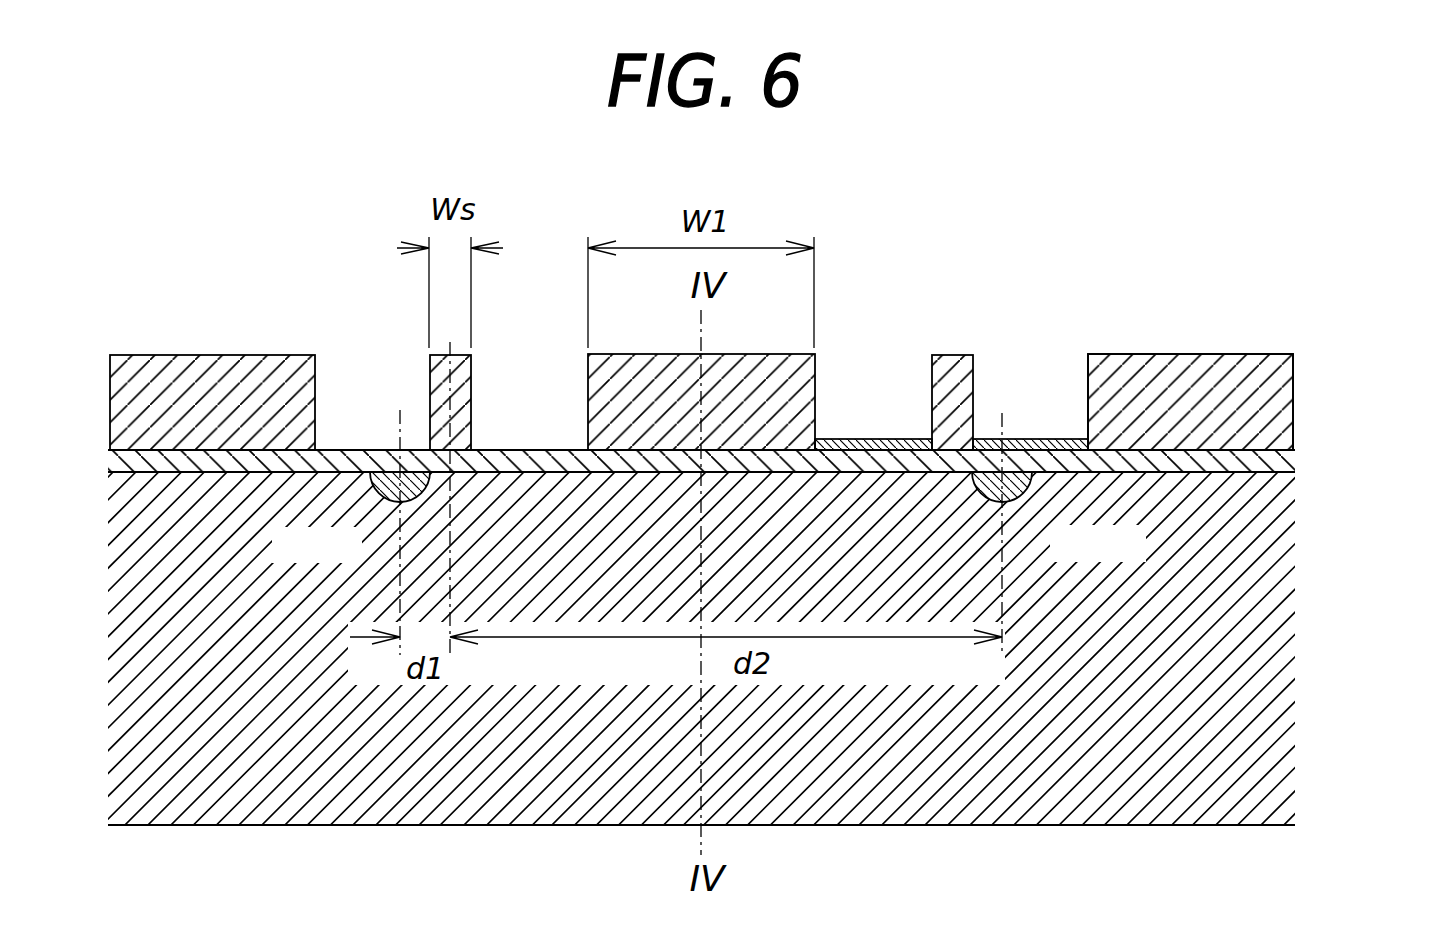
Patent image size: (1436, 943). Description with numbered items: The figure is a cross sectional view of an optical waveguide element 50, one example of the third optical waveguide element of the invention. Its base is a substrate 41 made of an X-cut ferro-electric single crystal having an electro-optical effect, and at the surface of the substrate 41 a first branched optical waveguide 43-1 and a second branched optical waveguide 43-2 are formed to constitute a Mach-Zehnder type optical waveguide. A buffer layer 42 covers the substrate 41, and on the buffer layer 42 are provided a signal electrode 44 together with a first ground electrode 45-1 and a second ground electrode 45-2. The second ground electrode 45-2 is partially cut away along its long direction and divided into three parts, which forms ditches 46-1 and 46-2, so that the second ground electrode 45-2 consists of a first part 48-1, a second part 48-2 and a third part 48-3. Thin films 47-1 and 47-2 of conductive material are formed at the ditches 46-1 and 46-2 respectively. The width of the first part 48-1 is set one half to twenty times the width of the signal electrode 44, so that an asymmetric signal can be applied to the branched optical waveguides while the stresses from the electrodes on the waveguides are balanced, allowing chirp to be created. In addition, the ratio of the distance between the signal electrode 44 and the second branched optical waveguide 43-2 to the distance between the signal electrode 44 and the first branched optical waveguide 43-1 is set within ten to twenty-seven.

The substrate 41 is at (1245, 640).
The buffer layer 42 is at (1283, 458).
The first branched optical waveguide 43-1 is at (370, 495).
The second branched optical waveguide 43-2 is at (1022, 497).
The signal electrode 44 is at (429, 378).
The first ground electrode 45-1 is at (213, 352).
The second ground electrode 45-2 is at (1293, 393).
The ditch 46-1 is at (853, 378).
The ditch 46-2 is at (1007, 373).
The thin film 47-1 is at (882, 440).
The thin film 47-2 is at (1033, 440).
The first part 48-1 is at (641, 354).
The second part 48-2 is at (962, 353).
The third part 48-3 is at (1238, 353).
The optical waveguide element 50 is at (1162, 257).